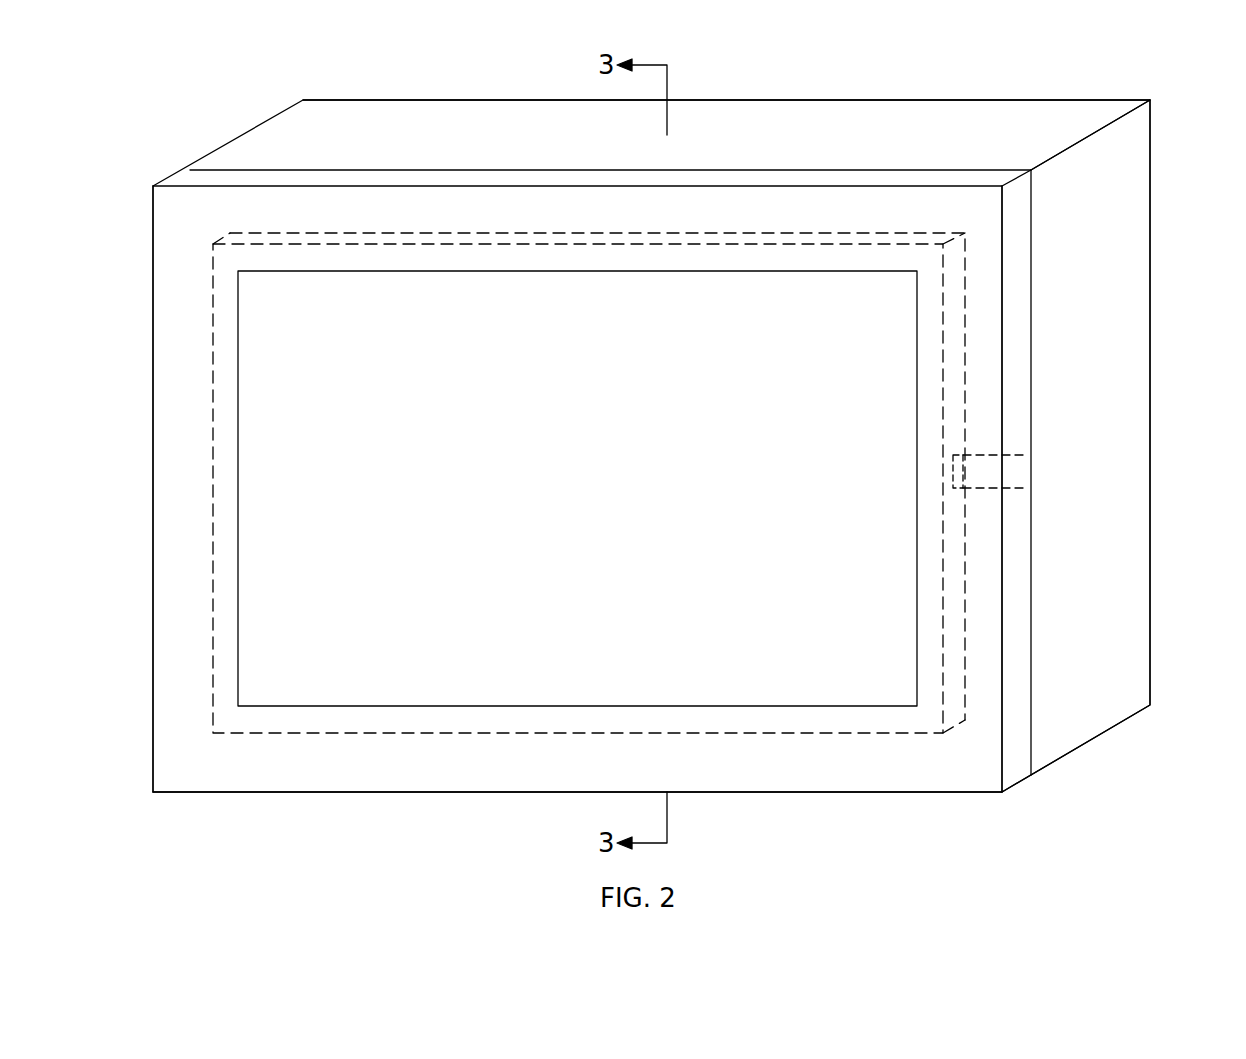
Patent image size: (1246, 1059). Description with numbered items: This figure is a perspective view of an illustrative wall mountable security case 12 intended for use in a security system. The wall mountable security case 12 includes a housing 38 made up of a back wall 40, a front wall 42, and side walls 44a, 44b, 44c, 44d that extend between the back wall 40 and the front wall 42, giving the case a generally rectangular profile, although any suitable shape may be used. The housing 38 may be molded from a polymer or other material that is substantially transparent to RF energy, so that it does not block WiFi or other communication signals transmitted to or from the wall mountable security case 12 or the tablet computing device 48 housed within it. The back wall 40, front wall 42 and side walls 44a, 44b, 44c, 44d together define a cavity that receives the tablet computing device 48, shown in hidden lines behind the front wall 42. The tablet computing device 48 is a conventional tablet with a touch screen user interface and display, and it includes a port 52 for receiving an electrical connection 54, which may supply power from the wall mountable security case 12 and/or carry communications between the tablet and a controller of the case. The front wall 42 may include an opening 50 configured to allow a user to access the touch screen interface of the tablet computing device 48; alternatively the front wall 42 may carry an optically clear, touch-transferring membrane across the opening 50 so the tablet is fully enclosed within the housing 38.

The wall mountable security case 12 is at (1022, 76).
The housing 38 is at (240, 133).
The back wall 40 is at (420, 99).
The front wall 42 is at (187, 567).
The side wall 44a is at (1118, 640).
The side wall 44b is at (840, 115).
The side wall 44c is at (153, 335).
The side wall 44d is at (823, 792).
The tablet computing device 48 is at (957, 267).
The opening 50 is at (267, 473).
The port 52 is at (955, 455).
The electrical connection 54 is at (993, 488).